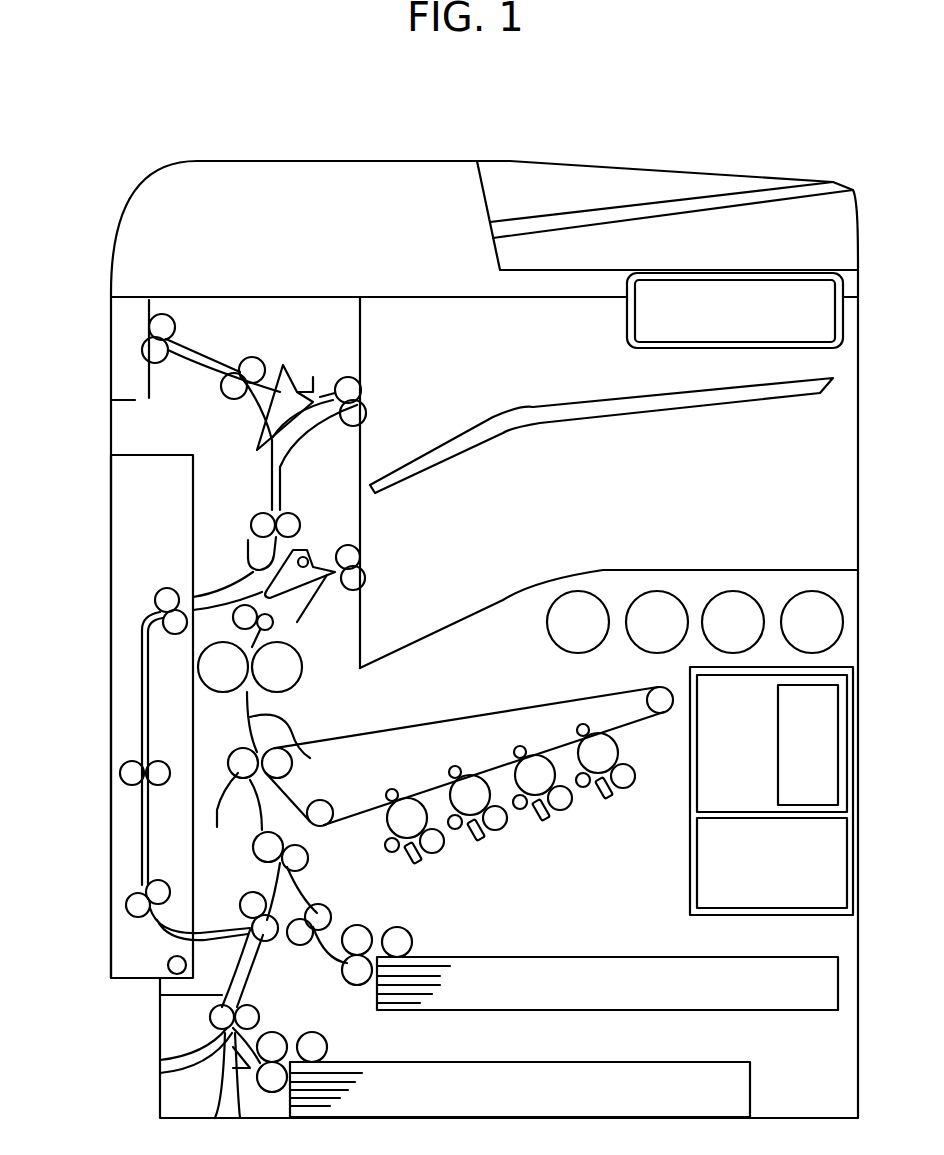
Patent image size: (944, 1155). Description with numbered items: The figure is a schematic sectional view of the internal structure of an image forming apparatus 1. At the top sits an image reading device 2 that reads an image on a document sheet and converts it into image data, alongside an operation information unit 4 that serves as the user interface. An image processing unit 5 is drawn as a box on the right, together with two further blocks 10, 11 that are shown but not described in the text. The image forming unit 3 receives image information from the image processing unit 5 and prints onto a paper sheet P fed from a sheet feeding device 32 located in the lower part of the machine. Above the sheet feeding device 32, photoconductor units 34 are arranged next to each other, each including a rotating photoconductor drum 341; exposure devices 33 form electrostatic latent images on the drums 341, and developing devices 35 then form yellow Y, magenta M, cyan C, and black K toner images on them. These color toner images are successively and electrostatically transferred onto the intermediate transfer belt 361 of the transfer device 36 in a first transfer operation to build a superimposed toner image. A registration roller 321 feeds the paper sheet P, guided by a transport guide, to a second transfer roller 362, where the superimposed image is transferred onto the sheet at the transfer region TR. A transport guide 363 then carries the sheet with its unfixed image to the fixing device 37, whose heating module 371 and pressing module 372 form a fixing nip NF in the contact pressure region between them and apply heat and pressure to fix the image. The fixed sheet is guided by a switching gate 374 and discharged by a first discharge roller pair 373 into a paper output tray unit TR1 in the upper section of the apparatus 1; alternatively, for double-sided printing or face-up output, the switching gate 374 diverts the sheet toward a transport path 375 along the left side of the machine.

The image forming apparatus 1 is at (118, 156).
The image reading device 2 is at (323, 250).
The image forming unit 3 is at (557, 882).
The operation information unit 4 is at (744, 328).
The image processing unit 5 is at (784, 878).
The storage unit 10 is at (743, 713).
The memory 11 is at (828, 763).
The sheet feeding device 32 is at (416, 918).
The registration roller 321 is at (307, 860).
The exposure device 33 is at (606, 798).
The photoconductor unit 34 is at (572, 762).
The photoconductor drum 341 is at (597, 753).
The developing device 35 is at (636, 790).
The transfer device 36 is at (392, 713).
The intermediate transfer belt 361 is at (448, 713).
The second transfer roller 362 is at (300, 855).
The transport guide 363 is at (312, 762).
The fixing device 37 is at (320, 637).
The heating module 371 is at (282, 692).
The pressing module 372 is at (224, 694).
The first discharge roller pair 373 is at (368, 572).
The switching gate 374 is at (312, 565).
The transport path 375 is at (258, 487).
The fixing nip NF is at (250, 645).
The secondary transfer nip TR is at (264, 778).
The paper output tray unit TR1 is at (534, 580).
The black toner image K is at (569, 637).
The cyan toner image C is at (648, 637).
The magenta toner image M is at (723, 637).
The yellow toner image Y is at (803, 637).
The paper sheet P is at (471, 1000).